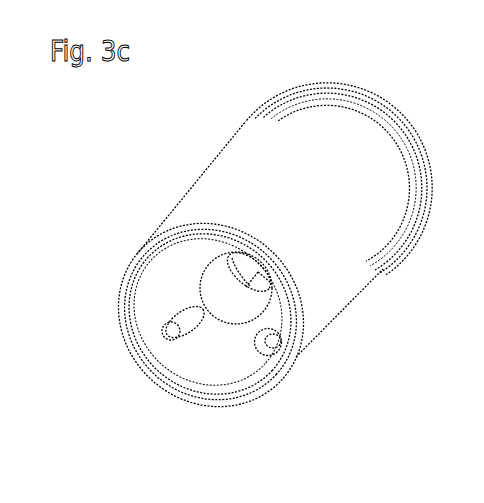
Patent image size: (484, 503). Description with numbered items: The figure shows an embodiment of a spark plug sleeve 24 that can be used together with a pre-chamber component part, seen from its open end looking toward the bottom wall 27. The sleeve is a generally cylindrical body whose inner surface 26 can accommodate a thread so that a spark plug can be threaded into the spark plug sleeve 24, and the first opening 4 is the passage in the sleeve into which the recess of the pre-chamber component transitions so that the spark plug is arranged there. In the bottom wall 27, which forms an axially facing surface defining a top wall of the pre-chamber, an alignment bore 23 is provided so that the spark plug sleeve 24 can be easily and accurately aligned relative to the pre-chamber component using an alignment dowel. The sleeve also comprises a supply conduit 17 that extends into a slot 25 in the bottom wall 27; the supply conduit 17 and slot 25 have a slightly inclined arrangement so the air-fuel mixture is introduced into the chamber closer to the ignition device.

The spark plug sleeve 24 is at (358, 133).
The bottom wall 27 is at (207, 357).
The first opening 4 is at (268, 308).
The inner surface 26 is at (218, 286).
The slot 25 is at (178, 320).
The supply conduit 17 is at (170, 338).
The alignment bore 23 is at (266, 358).